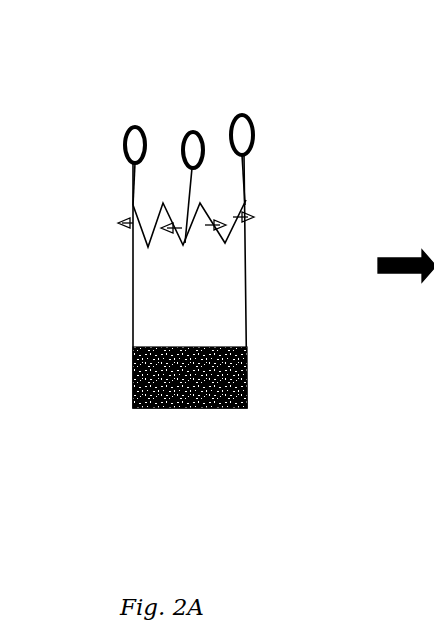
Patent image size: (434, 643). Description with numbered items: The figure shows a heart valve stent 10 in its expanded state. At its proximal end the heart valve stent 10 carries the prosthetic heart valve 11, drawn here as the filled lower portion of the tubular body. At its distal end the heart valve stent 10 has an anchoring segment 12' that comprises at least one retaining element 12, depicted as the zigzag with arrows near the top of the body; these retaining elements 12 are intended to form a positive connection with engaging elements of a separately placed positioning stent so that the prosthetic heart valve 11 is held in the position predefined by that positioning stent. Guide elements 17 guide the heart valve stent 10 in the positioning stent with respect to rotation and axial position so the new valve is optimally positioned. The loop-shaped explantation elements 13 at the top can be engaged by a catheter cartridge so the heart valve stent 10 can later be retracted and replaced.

The heart valve stent 10 is at (85, 176).
The prosthetic heart valve 11 is at (260, 342).
The retaining element 12 is at (240, 225).
The anchoring segment 12' is at (186, 222).
The explantation element 13 is at (241, 113).
The guide element 17 is at (222, 238).